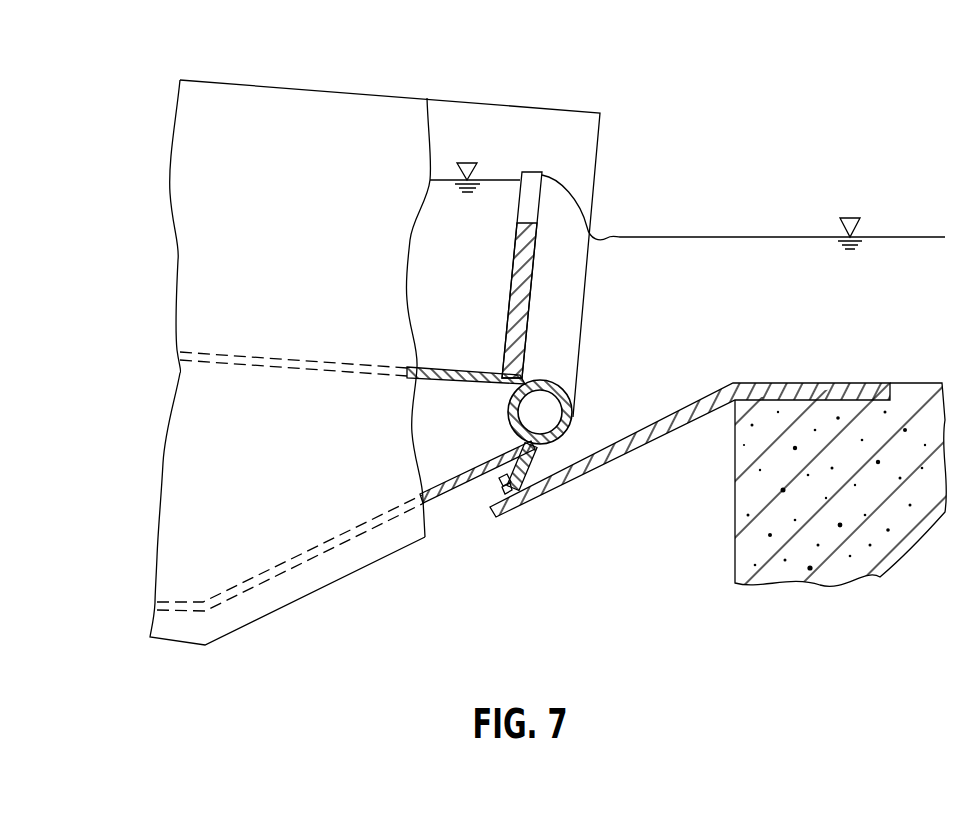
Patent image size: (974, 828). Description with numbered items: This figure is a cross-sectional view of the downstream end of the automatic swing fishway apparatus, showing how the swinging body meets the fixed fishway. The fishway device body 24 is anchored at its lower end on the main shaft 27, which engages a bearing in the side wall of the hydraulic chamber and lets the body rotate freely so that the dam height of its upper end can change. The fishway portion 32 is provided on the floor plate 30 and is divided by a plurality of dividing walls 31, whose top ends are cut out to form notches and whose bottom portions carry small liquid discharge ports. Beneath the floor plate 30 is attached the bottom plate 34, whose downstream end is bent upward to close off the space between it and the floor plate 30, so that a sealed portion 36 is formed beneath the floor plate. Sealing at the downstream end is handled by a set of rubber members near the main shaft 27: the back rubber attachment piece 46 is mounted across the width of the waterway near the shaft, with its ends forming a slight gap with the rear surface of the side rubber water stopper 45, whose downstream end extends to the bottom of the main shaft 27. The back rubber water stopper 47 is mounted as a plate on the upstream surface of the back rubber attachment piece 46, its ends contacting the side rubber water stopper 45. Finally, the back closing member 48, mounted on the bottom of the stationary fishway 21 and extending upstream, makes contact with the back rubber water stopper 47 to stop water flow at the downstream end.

The stationary fishway 21 is at (905, 252).
The fishway device body 24 is at (330, 82).
The main shaft 27 is at (573, 421).
The floor plate 30 is at (346, 362).
The dividing walls 31 is at (517, 283).
The fishway portion 32 is at (299, 221).
The bottom plate 34 is at (322, 543).
The sealed portion 36 is at (274, 451).
The side rubber water stopper 45 is at (332, 583).
The back rubber attachment piece 46 is at (557, 480).
The back rubber water stopper 47 is at (510, 488).
The back closing member 48 is at (672, 433).